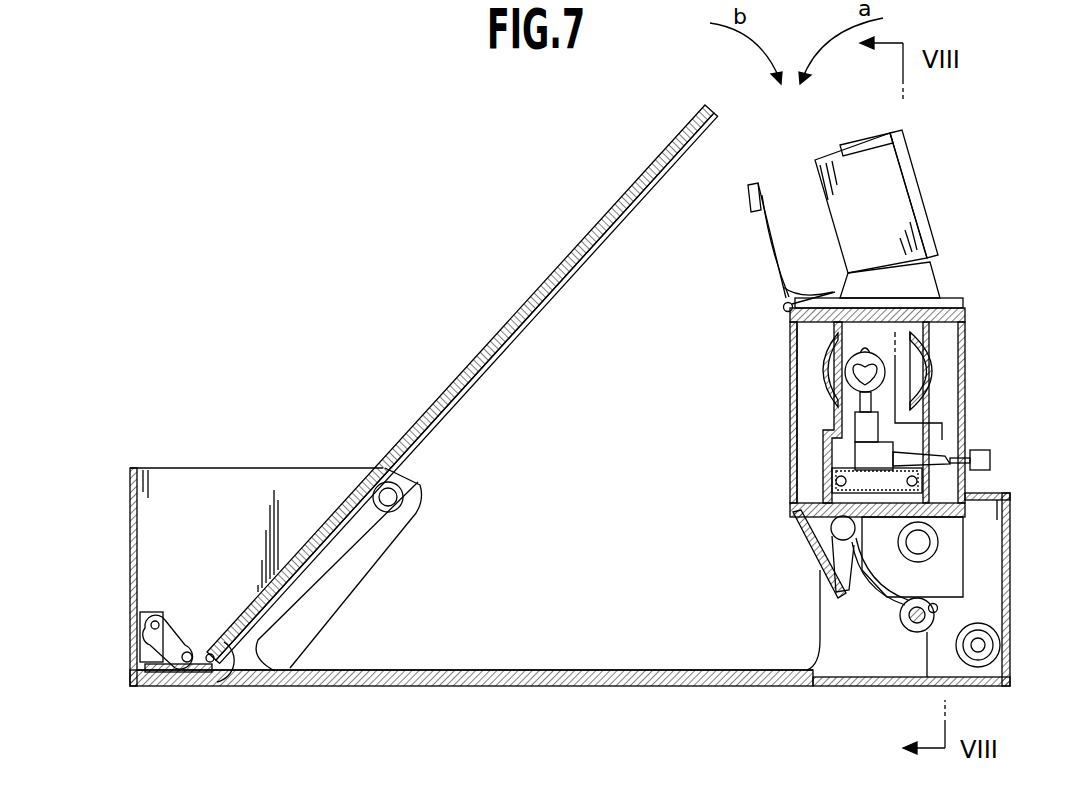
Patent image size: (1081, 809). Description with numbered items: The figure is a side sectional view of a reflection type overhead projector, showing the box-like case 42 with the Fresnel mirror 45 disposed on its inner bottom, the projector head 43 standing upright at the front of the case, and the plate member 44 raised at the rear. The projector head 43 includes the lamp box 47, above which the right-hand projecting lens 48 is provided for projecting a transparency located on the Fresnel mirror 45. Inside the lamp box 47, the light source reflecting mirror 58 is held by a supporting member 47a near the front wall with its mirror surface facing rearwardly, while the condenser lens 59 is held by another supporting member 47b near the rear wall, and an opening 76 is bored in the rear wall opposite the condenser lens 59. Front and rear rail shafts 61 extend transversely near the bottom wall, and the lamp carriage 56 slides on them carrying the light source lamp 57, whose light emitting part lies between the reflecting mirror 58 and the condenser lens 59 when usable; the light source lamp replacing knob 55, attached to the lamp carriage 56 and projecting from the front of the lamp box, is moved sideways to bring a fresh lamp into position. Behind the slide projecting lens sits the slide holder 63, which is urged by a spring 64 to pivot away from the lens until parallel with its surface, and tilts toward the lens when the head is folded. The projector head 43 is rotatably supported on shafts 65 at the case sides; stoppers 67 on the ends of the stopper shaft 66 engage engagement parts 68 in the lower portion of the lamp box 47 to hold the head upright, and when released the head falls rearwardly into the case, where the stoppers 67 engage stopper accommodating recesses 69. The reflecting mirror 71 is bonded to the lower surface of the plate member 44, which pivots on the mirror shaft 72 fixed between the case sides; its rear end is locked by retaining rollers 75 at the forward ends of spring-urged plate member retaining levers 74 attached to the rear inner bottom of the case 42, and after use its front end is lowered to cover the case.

The case 42 is at (495, 684).
The projector head 43 is at (986, 260).
The plate member 44 is at (572, 262).
The Fresnel mirror 45 is at (589, 668).
The lamp box 47 is at (964, 343).
The supporting member 47a is at (930, 407).
The supporting member 47b is at (824, 442).
The projecting lens 48 is at (893, 162).
The light source lamp replacing knob 55 is at (988, 453).
The lamp carriage 56 is at (803, 507).
The light source lamp 57 is at (867, 403).
The light source reflecting mirror 58 is at (933, 370).
The condenser lens 59 is at (822, 372).
The rail shafts 61 is at (831, 482).
The slide holder 63 is at (768, 238).
The spring 64 is at (802, 290).
The shafts 65 is at (935, 545).
The stopper shaft 66 is at (917, 622).
The stoppers 67 is at (900, 618).
The engagement parts 68 is at (937, 609).
The stopper accommodating recesses 69 is at (832, 533).
The reflecting mirror 71 is at (601, 240).
The mirror shaft 72 is at (393, 497).
The plate member retaining levers 74 is at (165, 640).
The retaining rollers 75 is at (232, 672).
The opening 76 is at (790, 338).